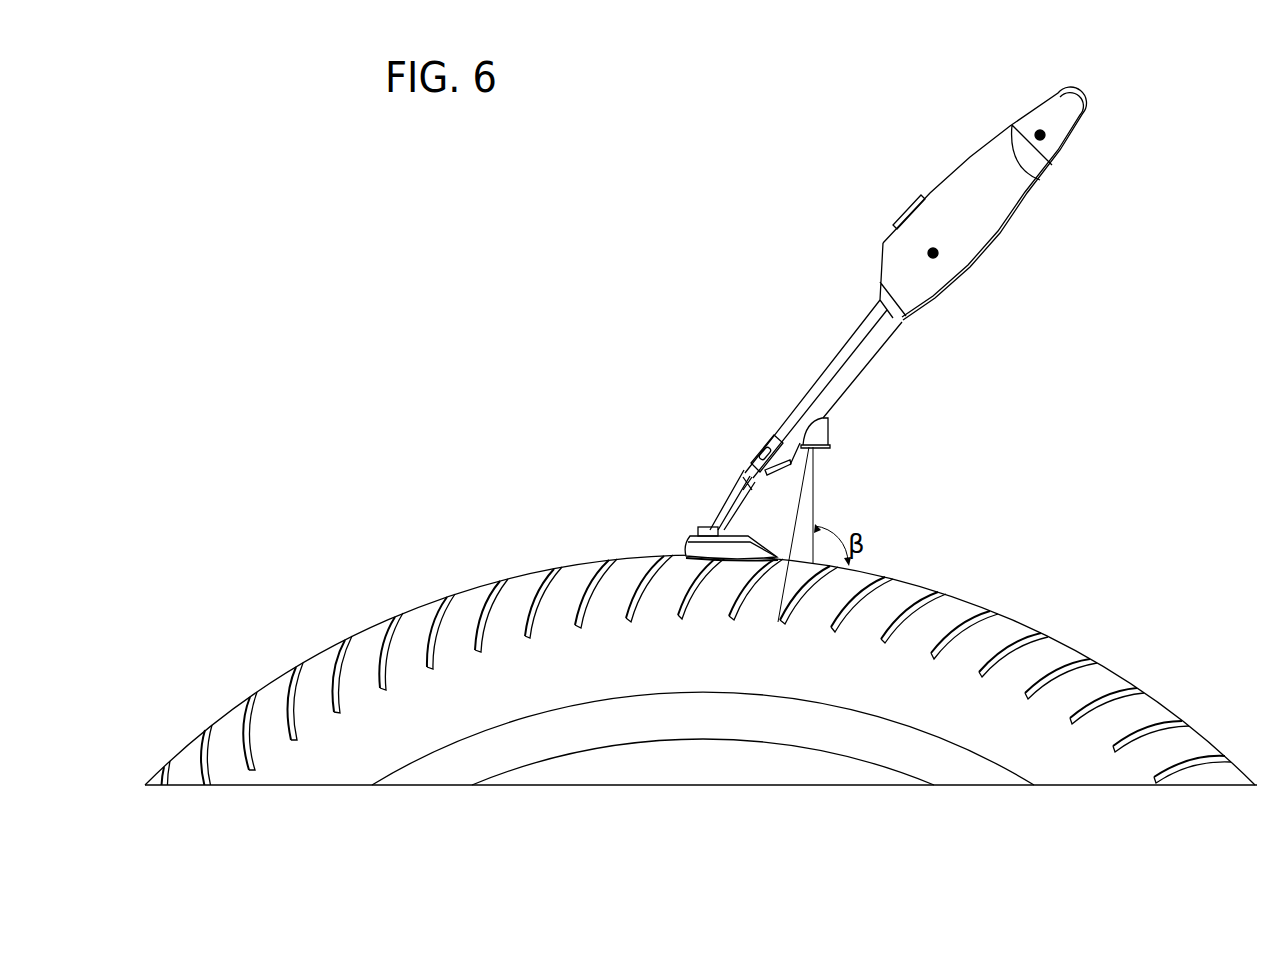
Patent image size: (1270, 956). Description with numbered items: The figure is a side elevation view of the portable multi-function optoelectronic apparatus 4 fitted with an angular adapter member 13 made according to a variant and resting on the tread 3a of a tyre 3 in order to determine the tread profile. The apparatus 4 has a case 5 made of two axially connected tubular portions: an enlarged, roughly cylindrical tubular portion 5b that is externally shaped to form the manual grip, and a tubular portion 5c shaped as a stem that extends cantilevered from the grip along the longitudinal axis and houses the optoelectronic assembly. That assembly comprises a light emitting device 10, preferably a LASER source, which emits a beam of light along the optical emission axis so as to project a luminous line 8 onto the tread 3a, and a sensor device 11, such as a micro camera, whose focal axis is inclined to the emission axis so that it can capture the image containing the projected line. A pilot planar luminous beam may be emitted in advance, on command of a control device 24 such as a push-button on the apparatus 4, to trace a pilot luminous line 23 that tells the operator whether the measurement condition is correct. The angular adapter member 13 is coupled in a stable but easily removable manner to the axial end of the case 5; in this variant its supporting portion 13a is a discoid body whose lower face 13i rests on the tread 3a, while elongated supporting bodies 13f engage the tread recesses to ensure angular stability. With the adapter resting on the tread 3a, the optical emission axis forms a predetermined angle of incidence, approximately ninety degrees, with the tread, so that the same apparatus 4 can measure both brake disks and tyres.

The tyre 3 is at (701, 697).
The tread 3a is at (1045, 623).
The portable multi-function optoelectronic apparatus 4 is at (881, 422).
The case 5 is at (998, 177).
The tubular portion 5b is at (992, 220).
The tubular portion 5c is at (823, 366).
The luminous line 8 is at (793, 534).
The pilot luminous line 23 is at (800, 612).
The light emitting device 10 is at (845, 429).
The sensor device 11 is at (777, 486).
The angular adapter member 13 is at (675, 624).
The supporting portion 13a is at (678, 544).
The supporting bodies 13f is at (705, 520).
The lower face 13i is at (739, 570).
The control device 24 is at (888, 205).